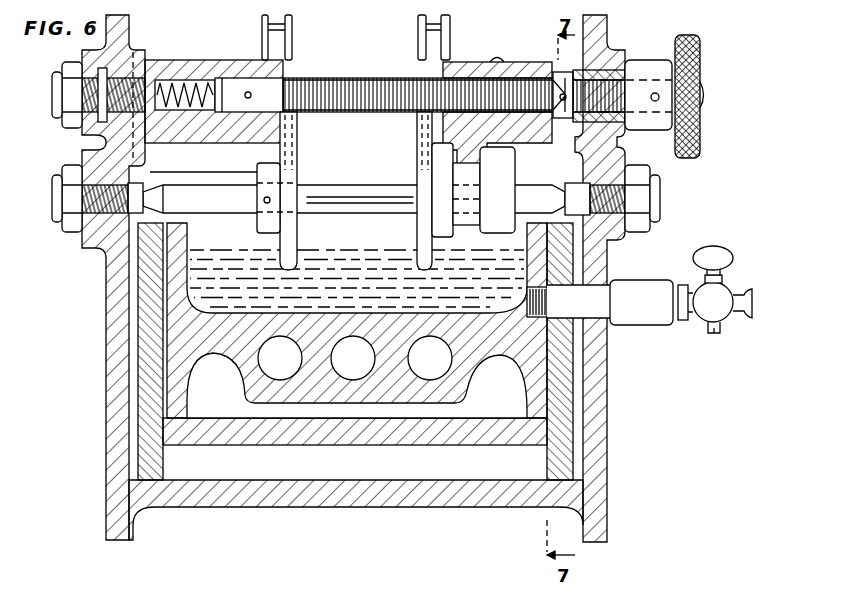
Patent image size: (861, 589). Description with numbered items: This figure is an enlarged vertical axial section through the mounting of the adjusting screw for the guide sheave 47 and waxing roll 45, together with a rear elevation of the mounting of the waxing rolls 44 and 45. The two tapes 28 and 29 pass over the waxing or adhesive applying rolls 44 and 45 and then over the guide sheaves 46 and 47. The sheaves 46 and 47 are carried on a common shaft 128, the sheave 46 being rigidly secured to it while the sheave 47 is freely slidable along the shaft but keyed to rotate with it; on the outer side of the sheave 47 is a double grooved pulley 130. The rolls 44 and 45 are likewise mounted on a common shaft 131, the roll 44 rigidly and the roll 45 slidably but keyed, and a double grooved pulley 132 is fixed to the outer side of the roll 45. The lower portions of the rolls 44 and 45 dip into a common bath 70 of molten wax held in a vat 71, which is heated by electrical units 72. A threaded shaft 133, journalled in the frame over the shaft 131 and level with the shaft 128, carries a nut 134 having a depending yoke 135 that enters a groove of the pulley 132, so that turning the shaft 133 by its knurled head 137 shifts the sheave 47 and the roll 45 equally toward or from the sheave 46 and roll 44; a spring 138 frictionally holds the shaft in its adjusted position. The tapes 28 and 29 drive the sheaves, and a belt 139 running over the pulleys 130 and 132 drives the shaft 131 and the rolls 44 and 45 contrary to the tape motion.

The tape 28 is at (294, 118).
The tape 29 is at (417, 118).
The waxing roll 44 is at (297, 180).
The waxing roll 45 is at (417, 182).
The guide sheave 46 is at (262, 45).
The guide sheave 47 is at (418, 34).
The bath 70 is at (215, 276).
The vat 71 is at (182, 318).
The electrical units 72 is at (268, 372).
The shaft 128 is at (326, 79).
The double grooved pulley 130 is at (473, 62).
The shaft 131 is at (345, 207).
The double grooved pulley 132 is at (512, 162).
The threaded shaft 133 is at (362, 79).
The nut 134 is at (540, 62).
The depending yoke 135 is at (487, 172).
The knurled head 137 is at (688, 158).
The spring 138 is at (215, 86).
The belt 139 is at (498, 60).